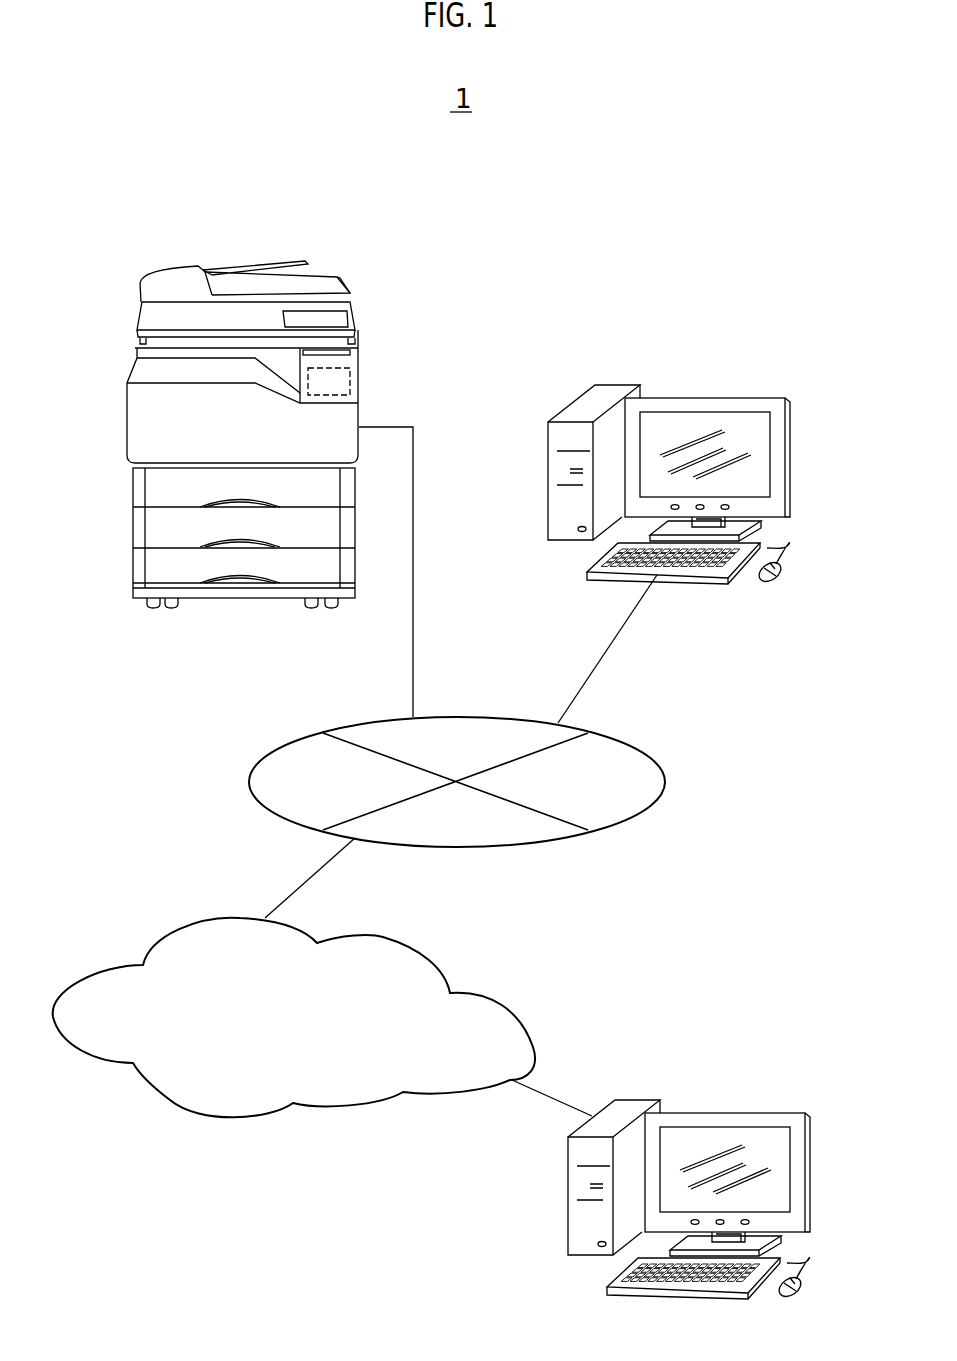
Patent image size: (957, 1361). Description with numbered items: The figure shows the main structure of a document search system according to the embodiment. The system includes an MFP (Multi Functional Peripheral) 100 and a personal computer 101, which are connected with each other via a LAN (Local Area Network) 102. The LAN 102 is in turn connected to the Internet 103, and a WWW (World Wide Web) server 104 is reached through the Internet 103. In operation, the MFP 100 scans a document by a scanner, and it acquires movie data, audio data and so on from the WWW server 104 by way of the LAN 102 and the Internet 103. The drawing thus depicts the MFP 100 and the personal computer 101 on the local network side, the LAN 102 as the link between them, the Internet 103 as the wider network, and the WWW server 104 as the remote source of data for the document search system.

The MFP (Multi Functional Peripheral) 100 is at (172, 265).
The personal computer 101 is at (747, 395).
The LAN (Local Area Network) 102 is at (633, 745).
The Internet 103 is at (482, 1000).
The WWW (World Wide Web) server 104 is at (767, 1112).